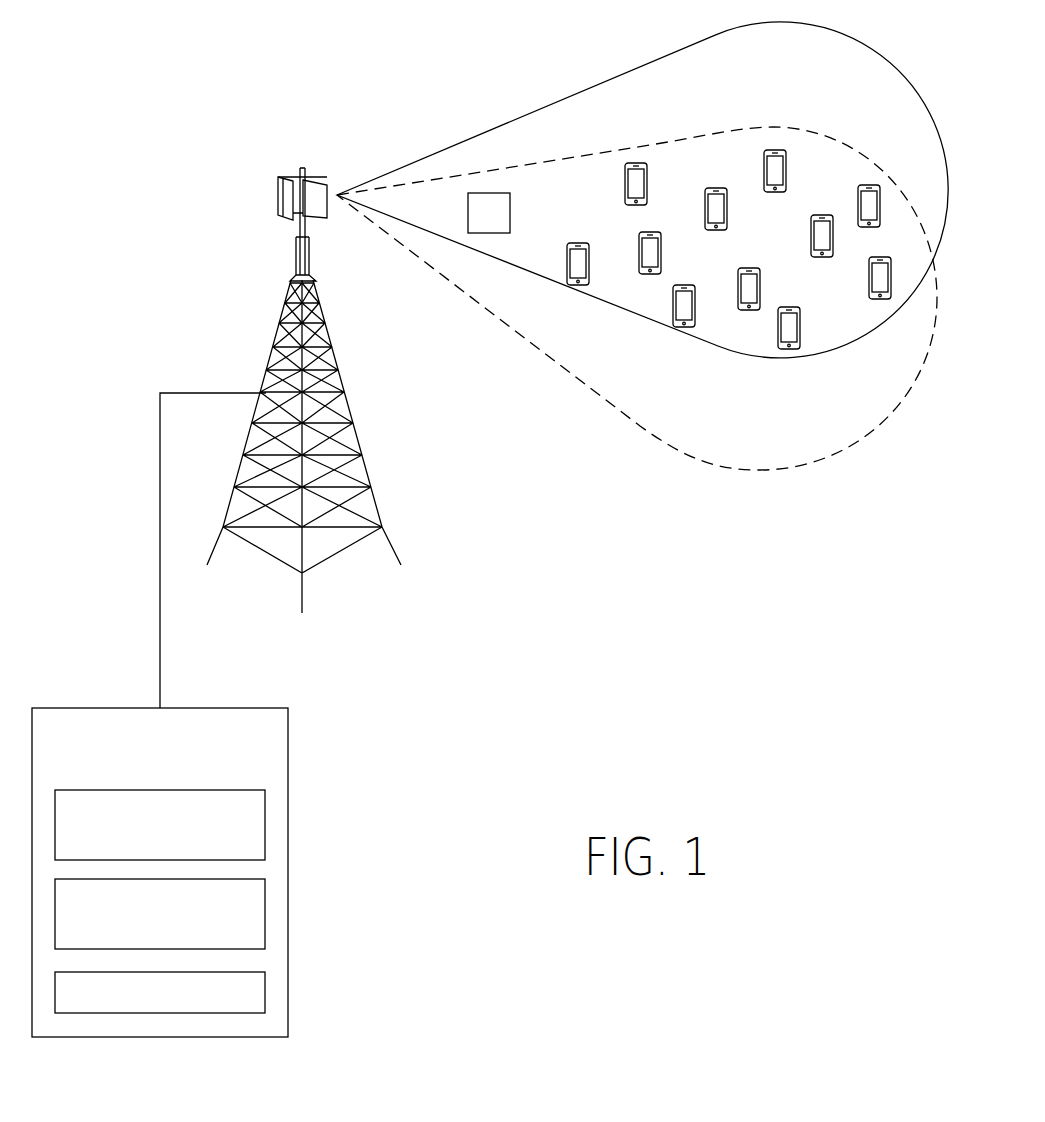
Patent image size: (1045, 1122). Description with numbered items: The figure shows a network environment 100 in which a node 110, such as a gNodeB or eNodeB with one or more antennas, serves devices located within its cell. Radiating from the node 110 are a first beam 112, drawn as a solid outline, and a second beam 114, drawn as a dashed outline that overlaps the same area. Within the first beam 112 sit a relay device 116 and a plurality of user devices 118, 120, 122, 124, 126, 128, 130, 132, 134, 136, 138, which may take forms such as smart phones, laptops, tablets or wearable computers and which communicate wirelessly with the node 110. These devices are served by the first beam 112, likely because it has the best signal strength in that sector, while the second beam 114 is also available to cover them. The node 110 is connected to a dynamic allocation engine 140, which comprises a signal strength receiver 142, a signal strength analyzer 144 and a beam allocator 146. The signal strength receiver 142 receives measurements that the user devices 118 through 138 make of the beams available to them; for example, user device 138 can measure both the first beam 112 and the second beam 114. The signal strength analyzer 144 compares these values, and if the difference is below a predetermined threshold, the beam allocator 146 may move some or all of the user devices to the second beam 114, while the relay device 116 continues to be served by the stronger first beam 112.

The network environment 100 is at (100, 60).
The node 110 is at (296, 259).
The first beam 112 is at (653, 55).
The second beam 114 is at (617, 403).
The relay device 116 is at (510, 207).
The user device 118 is at (636, 163).
The user device 120 is at (775, 150).
The user device 122 is at (869, 185).
The user device 124 is at (880, 299).
The user device 126 is at (822, 257).
The user device 128 is at (789, 349).
The user device 130 is at (749, 310).
The user device 132 is at (716, 230).
The user device 134 is at (684, 327).
The user device 136 is at (650, 274).
The user device 138 is at (578, 285).
The dynamic allocation engine 140 is at (292, 740).
The signal strength receiver 142 is at (265, 822).
The signal strength analyzer 144 is at (265, 912).
The beam allocator 146 is at (265, 990).